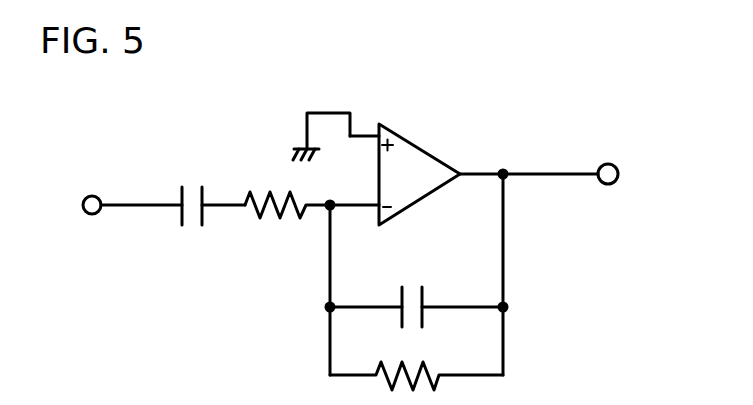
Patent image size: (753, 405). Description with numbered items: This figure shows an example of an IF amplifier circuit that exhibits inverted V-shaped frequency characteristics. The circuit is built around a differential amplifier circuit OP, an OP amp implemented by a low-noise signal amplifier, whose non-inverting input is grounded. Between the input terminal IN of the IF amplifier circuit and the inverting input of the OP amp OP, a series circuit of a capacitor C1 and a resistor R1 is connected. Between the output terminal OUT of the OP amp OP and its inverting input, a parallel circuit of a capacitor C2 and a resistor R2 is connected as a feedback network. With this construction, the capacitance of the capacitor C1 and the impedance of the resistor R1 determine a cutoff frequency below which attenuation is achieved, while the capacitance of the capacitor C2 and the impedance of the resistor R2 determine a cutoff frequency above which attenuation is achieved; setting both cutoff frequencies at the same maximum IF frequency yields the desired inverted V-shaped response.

The input terminal IN is at (126, 190).
The capacitor C1 is at (208, 191).
The resistor R1 is at (287, 190).
The differential amplifier circuit OP is at (398, 166).
The output terminal OUT is at (566, 161).
The capacitor C2 is at (416, 295).
The resistor R2 is at (416, 366).